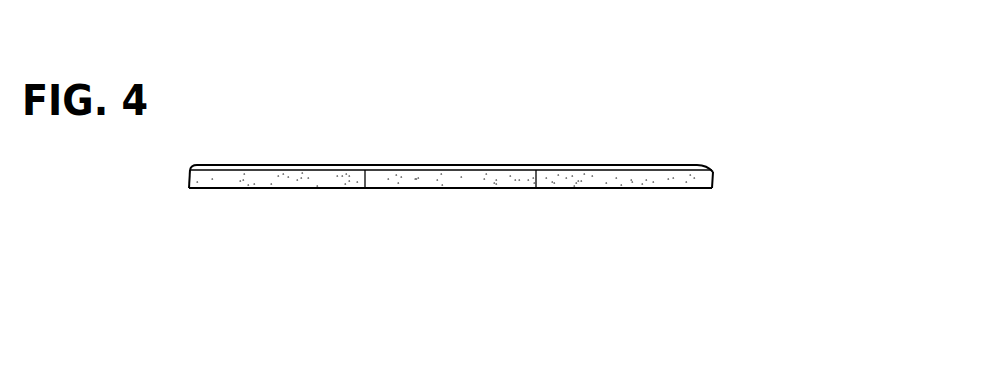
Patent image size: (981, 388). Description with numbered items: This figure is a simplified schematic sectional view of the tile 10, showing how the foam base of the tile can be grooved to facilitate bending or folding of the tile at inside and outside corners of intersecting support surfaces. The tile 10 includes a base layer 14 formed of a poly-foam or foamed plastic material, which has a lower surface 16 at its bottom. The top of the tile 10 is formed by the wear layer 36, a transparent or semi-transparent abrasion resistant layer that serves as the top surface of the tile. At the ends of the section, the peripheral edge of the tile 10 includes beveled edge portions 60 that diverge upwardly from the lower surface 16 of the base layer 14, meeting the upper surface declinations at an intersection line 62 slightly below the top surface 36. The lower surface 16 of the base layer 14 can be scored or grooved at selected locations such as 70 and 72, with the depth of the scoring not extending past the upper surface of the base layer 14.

The tile 10 is at (597, 101).
The base layer 14 is at (293, 181).
The lower surface 16 is at (461, 189).
The wear layer 36 is at (632, 165).
The beveled edge portions 60 is at (716, 178).
The intersection line 62 is at (188, 172).
The selected location 70 is at (365, 190).
The selected location 72 is at (536, 190).